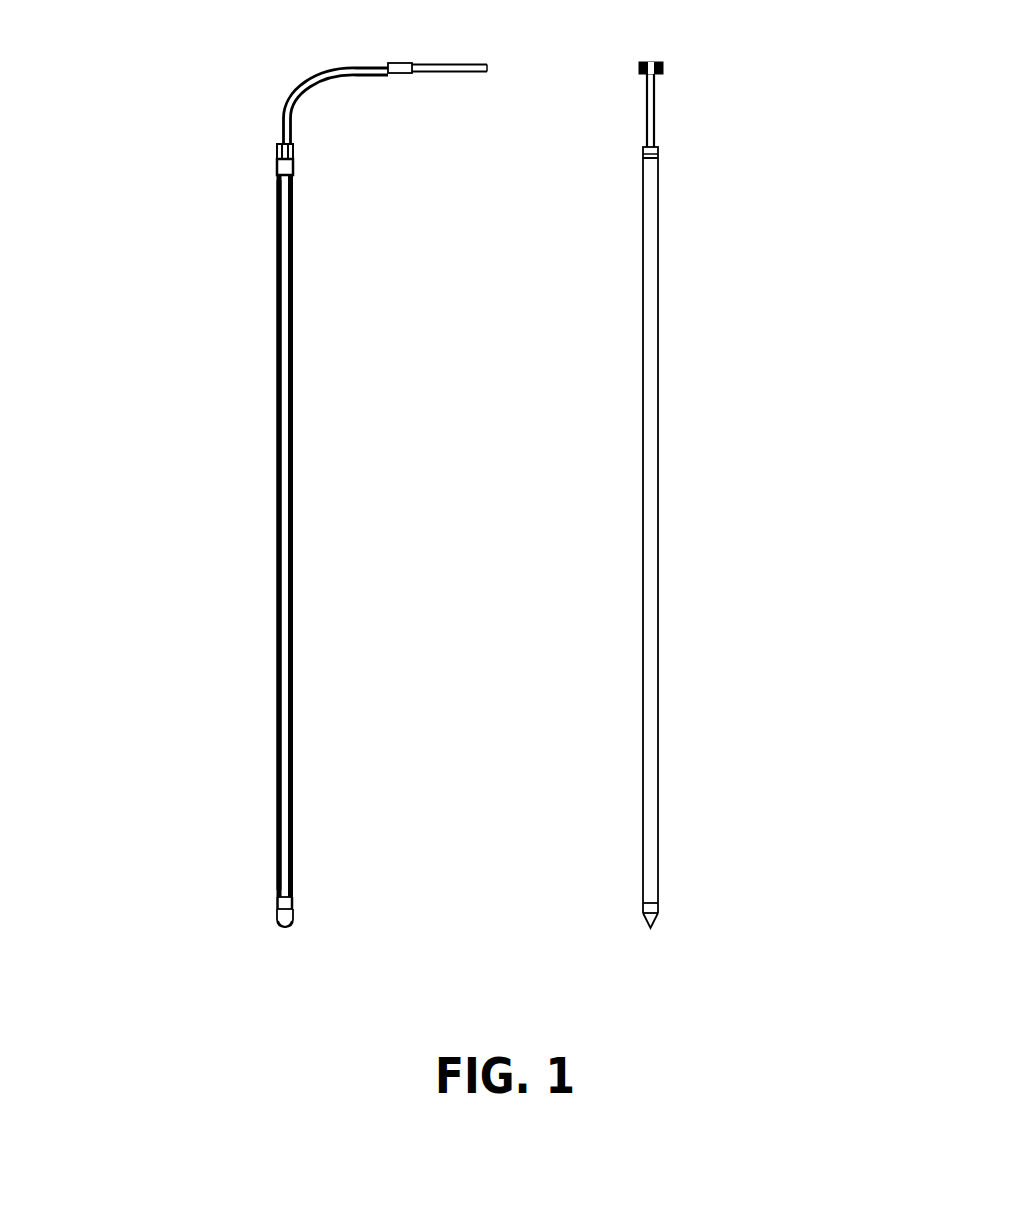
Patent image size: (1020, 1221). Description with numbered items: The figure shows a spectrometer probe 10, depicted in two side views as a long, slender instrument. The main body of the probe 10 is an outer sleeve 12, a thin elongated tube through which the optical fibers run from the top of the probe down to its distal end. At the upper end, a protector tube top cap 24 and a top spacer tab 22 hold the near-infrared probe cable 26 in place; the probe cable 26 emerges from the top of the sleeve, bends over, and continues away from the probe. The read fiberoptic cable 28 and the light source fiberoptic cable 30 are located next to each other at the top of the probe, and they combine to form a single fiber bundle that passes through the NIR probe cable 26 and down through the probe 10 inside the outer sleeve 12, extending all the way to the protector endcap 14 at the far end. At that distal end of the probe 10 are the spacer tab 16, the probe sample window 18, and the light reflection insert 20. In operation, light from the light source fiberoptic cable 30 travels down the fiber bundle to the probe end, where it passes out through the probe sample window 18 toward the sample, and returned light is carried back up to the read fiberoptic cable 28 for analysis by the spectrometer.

The spectrometer probe 10 is at (188, 644).
The outer sleeve 12 is at (273, 523).
The protector endcap 14 is at (277, 925).
The spacer tab 16 is at (275, 913).
The probe sample window 18 is at (275, 903).
The light reflection insert 20 is at (275, 895).
The top spacer tab 22 is at (273, 175).
The protector tube top cap 24 is at (275, 163).
The near-infrared (NIR) probe cable 26 is at (283, 108).
The read fiberoptic cable 28 is at (656, 75).
The light source fiberoptic cable 30 is at (647, 75).